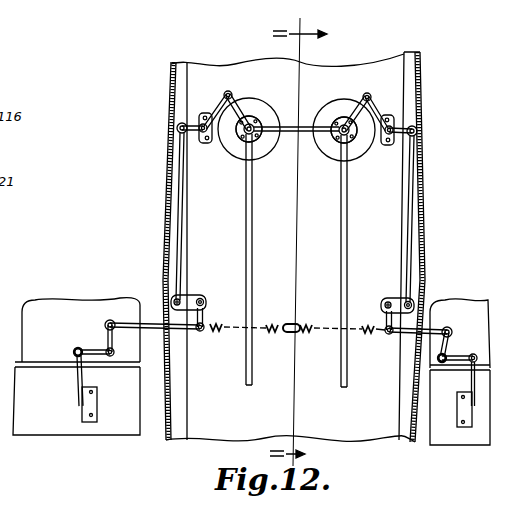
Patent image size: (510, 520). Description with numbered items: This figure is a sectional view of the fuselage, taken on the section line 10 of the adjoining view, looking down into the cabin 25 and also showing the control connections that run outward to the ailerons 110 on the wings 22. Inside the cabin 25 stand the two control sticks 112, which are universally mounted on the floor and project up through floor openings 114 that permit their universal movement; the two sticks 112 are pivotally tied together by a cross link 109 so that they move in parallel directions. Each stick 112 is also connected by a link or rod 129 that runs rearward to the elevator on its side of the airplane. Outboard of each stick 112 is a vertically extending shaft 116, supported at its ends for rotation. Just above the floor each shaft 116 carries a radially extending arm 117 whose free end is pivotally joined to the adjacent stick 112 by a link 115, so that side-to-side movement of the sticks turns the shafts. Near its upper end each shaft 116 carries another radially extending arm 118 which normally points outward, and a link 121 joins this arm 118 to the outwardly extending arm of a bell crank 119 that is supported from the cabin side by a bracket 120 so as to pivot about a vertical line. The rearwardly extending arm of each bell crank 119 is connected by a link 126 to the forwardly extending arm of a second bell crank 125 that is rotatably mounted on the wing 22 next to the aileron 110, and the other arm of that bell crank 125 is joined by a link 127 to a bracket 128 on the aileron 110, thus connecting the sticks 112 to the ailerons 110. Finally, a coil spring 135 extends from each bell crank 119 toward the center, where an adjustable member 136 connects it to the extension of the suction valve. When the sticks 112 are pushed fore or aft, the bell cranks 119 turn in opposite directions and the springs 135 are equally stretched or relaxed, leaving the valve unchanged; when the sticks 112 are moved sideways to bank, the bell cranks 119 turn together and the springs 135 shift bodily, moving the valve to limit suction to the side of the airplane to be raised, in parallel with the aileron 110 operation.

The section line of Fig. 10 is at (315, 242).
The wing 22 is at (65, 312).
The cabin 25 is at (166, 172).
The cross link 109 is at (305, 128).
The aileron 110 is at (65, 430).
The control stick 112 is at (273, 111).
The floor opening 114 is at (314, 143).
The link 115 is at (240, 110).
The vertically extending shaft 116 is at (208, 143).
The radially extending arm 117 is at (208, 118).
The radially extending arm 118 is at (185, 124).
The bell crank 119 is at (188, 297).
The bracket 120 is at (203, 299).
The link 121 is at (181, 242).
The bell crank 125 is at (108, 350).
The link 126 is at (150, 322).
The link 127 is at (78, 378).
The bracket 128 is at (98, 428).
The link or rod 129 is at (249, 218).
The coil spring 135 is at (257, 325).
The adjustable member 136 is at (292, 333).